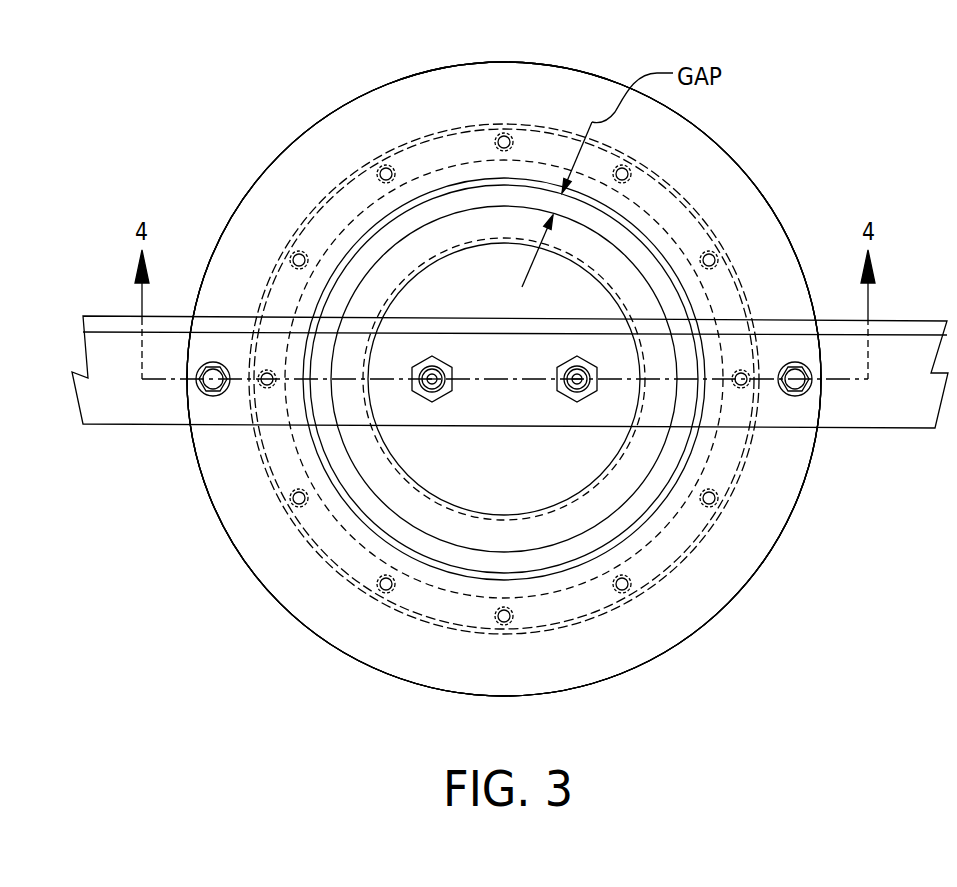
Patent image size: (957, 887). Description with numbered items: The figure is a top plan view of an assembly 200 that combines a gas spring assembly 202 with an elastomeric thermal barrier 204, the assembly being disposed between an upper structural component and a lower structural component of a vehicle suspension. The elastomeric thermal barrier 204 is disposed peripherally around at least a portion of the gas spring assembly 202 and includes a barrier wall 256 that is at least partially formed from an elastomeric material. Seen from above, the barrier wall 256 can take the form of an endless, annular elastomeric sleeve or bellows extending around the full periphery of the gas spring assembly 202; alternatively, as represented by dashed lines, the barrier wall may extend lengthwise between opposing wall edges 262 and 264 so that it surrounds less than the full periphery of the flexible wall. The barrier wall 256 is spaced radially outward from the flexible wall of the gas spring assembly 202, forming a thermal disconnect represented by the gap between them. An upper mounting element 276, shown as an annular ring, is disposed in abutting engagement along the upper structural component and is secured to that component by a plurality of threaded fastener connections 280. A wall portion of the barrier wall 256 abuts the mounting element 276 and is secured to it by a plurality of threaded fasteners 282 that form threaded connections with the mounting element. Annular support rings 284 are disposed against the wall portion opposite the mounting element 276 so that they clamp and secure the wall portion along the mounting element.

The assembly 200 is at (845, 177).
The gas spring assembly 202 is at (380, 505).
The elastomeric thermal barrier 204 is at (245, 153).
The barrier wall 256 is at (213, 510).
The wall edge 262 is at (363, 240).
The wall edge 264 is at (643, 242).
The upper mounting element 276 is at (712, 590).
The threaded fastener connections 280 is at (205, 392).
The threaded fasteners 282 is at (503, 136).
The annular support rings 284 is at (743, 473).